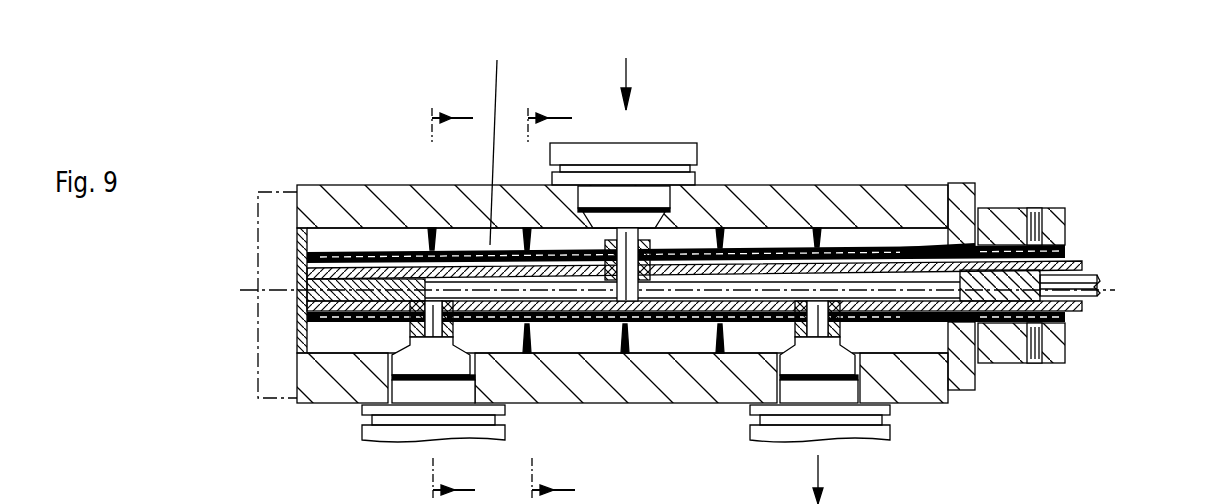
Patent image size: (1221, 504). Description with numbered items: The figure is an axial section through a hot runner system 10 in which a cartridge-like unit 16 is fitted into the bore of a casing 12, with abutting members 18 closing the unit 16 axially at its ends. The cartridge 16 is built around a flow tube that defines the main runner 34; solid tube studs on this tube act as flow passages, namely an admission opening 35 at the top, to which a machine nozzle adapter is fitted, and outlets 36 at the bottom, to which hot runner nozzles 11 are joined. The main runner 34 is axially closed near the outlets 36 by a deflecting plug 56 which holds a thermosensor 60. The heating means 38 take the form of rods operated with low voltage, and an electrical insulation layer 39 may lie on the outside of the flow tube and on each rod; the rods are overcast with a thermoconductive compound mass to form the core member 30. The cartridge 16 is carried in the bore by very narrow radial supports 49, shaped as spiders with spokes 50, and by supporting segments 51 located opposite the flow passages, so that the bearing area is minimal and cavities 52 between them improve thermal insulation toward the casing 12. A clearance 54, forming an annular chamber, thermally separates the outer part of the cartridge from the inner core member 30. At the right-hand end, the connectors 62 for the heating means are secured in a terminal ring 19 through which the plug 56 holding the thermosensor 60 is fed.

The hot runner system 10 is at (1133, 87).
The hot runner nozzles 11 is at (460, 392).
The casing 12 is at (318, 392).
The cartridge-like unit 16 is at (670, 165).
The core member 30 is at (340, 238).
The abutting members 18 is at (257, 233).
The terminal ring 19 is at (997, 222).
The main runner 34 is at (670, 293).
The admission opening 35 is at (637, 232).
The outlets 36 is at (433, 332).
The heating means 38 is at (350, 245).
The electrical insulation layer 39 is at (698, 317).
The radial supports 49 is at (624, 191).
The spokes 50 is at (722, 228).
The supporting segments 51 is at (828, 240).
The cavities 52 is at (647, 191).
The clearance 54 is at (395, 238).
The deflecting plug 56 is at (1013, 363).
The thermosensor 60 is at (908, 323).
The connectors 62 is at (1078, 295).